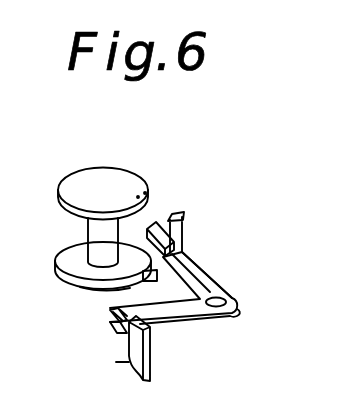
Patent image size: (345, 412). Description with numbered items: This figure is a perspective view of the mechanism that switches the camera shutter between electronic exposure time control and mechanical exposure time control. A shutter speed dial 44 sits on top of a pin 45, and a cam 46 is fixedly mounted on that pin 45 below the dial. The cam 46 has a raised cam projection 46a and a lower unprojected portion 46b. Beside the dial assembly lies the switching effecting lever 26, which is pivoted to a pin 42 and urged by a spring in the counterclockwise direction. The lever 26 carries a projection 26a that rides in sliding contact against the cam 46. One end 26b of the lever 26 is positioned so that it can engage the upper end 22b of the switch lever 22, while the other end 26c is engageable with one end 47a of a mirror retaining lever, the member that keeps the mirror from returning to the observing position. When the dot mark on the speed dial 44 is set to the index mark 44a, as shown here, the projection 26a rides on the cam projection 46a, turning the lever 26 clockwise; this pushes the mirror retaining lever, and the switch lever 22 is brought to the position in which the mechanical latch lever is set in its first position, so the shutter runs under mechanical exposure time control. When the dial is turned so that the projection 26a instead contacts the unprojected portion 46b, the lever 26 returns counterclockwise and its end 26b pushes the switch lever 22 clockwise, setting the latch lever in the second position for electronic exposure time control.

The shutter speed dial 44 is at (79, 182).
The index mark 44a is at (158, 194).
The pin 45 is at (92, 232).
The cam 46 is at (62, 263).
The cam projection 46a is at (150, 280).
The unprojected portion 46b is at (100, 289).
The switching effecting lever 26 is at (177, 266).
The projection 26a is at (186, 256).
The one end 26b is at (115, 314).
The other end 26c is at (156, 224).
The one end of mirror retaining lever 47a is at (182, 225).
The pin 42 is at (229, 302).
The switch lever 22 is at (154, 348).
The upper end 22b is at (129, 332).